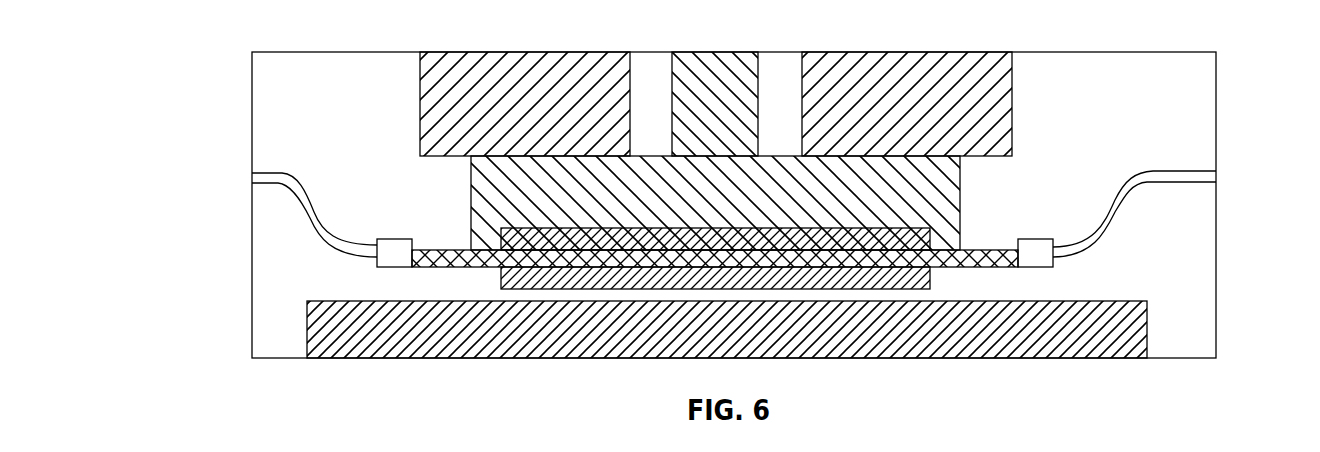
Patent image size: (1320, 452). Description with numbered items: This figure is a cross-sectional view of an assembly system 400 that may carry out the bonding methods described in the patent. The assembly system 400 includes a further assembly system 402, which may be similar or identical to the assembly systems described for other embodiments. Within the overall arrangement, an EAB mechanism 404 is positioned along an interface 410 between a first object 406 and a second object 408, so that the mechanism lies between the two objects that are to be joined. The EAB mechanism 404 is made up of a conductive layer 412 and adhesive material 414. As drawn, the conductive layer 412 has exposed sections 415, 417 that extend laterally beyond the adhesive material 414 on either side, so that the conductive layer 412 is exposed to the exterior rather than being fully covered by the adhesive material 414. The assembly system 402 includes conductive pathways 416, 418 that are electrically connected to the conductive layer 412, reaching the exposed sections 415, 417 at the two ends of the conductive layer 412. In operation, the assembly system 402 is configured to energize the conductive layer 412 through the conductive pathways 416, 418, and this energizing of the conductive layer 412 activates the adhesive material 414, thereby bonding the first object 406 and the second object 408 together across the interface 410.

The assembly system 400 is at (219, 61).
The assembly system 402 is at (517, 70).
The EAB mechanism 404 is at (570, 294).
The first object 406 is at (960, 203).
The second object 408 is at (962, 348).
The interface 410 is at (986, 283).
The conductive layer 412 is at (866, 252).
The adhesive material 414 is at (728, 232).
The exposed section 415 is at (442, 267).
The conductive pathway 416 is at (292, 188).
The exposed section 417 is at (953, 268).
The conductive pathway 418 is at (1135, 190).